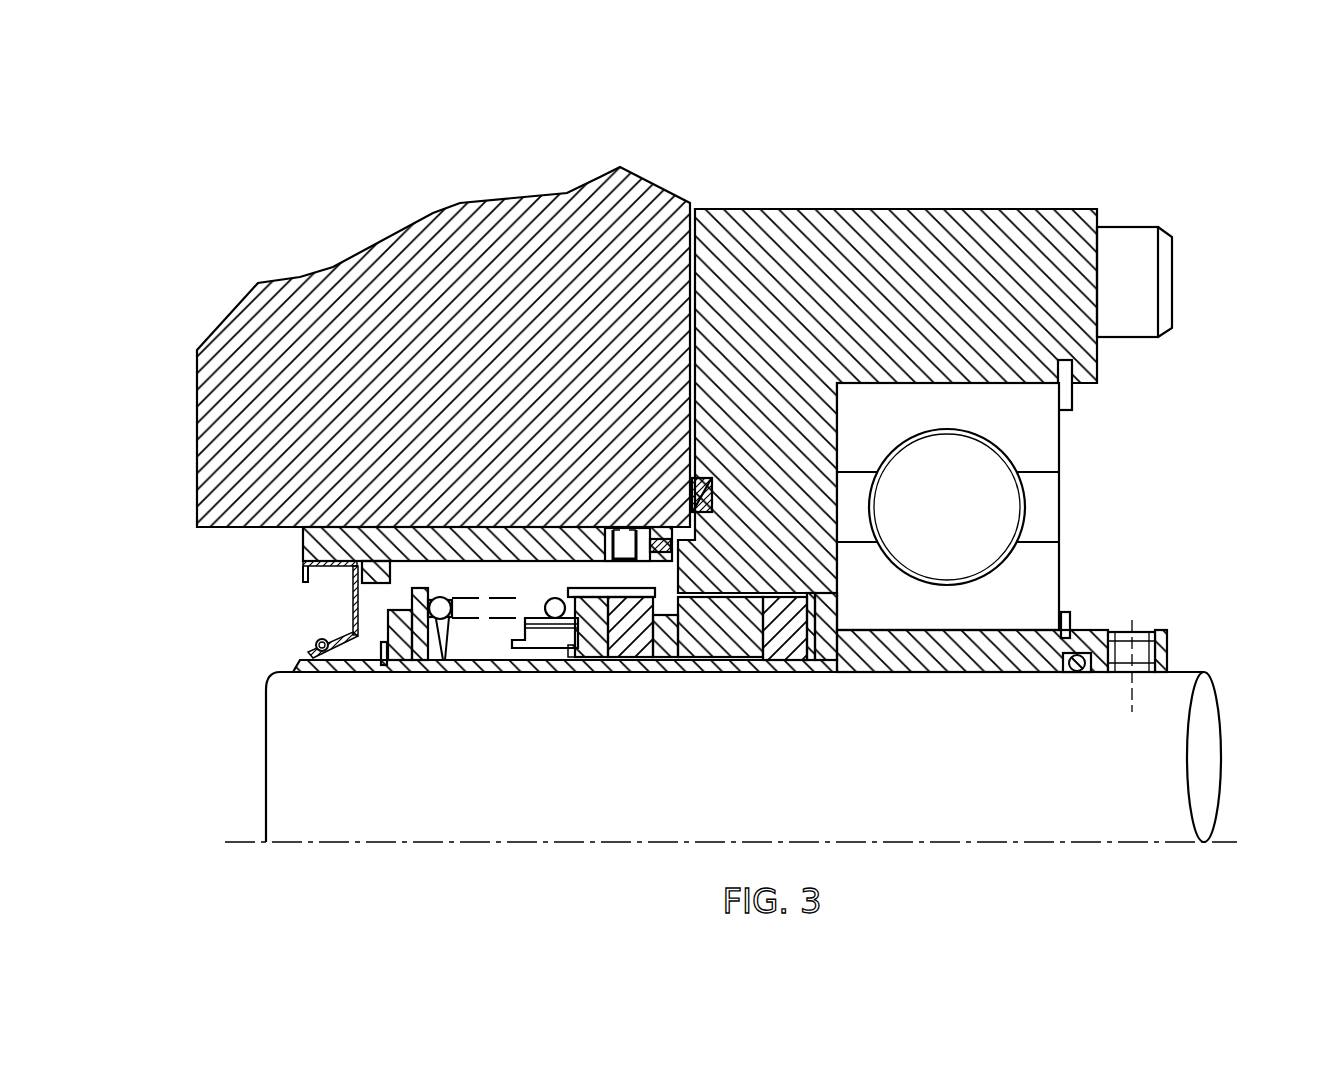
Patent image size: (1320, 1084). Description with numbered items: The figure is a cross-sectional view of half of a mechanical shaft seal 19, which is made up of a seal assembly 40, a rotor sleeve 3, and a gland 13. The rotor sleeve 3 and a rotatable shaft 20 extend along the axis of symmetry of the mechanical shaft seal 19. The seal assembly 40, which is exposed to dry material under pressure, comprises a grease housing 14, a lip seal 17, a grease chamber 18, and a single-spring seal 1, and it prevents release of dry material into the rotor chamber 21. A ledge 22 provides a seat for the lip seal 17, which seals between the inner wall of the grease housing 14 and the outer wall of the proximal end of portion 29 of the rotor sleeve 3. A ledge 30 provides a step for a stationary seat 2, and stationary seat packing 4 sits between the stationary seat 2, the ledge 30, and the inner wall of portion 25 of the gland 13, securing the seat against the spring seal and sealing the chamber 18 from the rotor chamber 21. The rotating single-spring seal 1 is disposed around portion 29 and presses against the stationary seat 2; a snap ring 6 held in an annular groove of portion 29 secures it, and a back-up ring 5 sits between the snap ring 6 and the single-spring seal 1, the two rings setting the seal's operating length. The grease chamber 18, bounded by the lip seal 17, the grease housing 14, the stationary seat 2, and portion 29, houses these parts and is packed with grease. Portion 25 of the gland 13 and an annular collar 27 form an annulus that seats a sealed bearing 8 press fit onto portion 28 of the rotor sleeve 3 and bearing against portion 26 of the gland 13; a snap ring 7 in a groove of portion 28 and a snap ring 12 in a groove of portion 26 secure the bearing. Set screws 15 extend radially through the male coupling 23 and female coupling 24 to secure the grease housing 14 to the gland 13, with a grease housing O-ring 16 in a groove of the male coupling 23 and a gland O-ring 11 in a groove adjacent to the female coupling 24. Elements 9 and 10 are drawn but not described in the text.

The single-spring seal 1 is at (575, 661).
The stationary seat 2 is at (712, 641).
The rotor sleeve 3 is at (489, 681).
The stationary seat packing 4 is at (784, 656).
The back-up ring 5 is at (400, 649).
The snap ring 6 is at (377, 664).
The snap ring 7 is at (1072, 621).
The sealed bearing 8 is at (944, 638).
The O-ring 9 is at (1079, 673).
The clamp nut 10 is at (1141, 674).
The gland O-ring 11 is at (700, 480).
The snap ring 12 is at (1073, 407).
The gland 13 is at (1097, 372).
The grease housing 14 is at (407, 526).
The set screws 15 is at (618, 530).
The grease housing O-ring 16 is at (652, 540).
The lip seal 17 is at (297, 577).
The grease chamber 18 is at (443, 662).
The mechanical shaft seal 19 is at (893, 137).
The rotatable shaft 20 is at (1212, 763).
The rotor chamber 21 is at (817, 656).
The ledge 22 is at (372, 579).
The male coupling 23 is at (668, 557).
The female coupling 24 is at (668, 545).
The portion of gland 25 is at (778, 312).
The portion of gland 26 is at (968, 225).
The annular collar 27 is at (836, 651).
The portion of rotor sleeve 28 is at (1013, 666).
The portion of rotor sleeve 29 is at (512, 668).
The ledge 30 is at (827, 641).
The seal assembly 40 is at (295, 535).